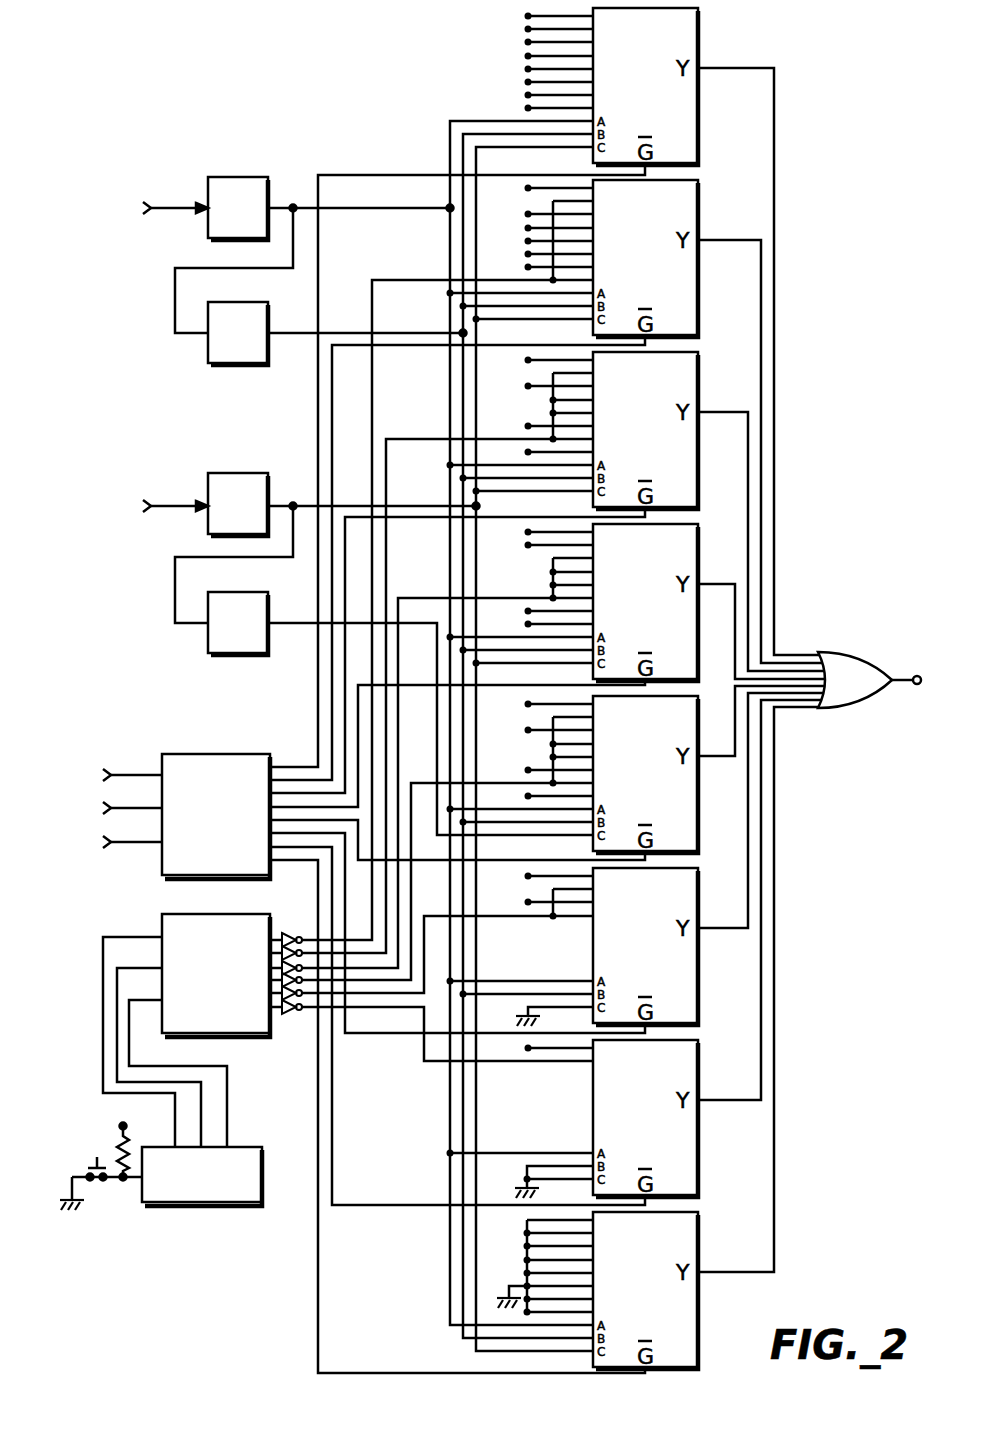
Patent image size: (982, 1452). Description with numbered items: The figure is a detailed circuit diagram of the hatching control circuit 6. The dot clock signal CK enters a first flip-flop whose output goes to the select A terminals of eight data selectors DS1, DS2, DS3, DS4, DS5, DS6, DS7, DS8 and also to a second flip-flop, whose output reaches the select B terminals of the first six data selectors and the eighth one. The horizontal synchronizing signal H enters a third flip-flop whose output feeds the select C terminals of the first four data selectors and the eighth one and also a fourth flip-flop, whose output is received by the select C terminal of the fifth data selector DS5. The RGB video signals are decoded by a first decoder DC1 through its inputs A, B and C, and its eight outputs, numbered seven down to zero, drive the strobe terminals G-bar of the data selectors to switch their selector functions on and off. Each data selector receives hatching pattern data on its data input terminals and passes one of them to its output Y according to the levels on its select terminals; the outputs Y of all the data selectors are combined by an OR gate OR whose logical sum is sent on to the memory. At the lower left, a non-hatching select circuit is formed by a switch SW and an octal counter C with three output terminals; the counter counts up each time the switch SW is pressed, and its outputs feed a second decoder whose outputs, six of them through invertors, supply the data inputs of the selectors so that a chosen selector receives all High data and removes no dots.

The hatching control circuit 6 is at (407, 107).
The first data selector DS1 is at (645, 86).
The second data selector DS2 is at (645, 258).
The third data selector DS3 is at (645, 430).
The fourth data selector DS4 is at (645, 602).
The fifth data selector DS5 is at (645, 774).
The sixth data selector DS6 is at (645, 946).
The seventh data selector DS7 is at (645, 1118).
The eighth data selector DS8 is at (645, 1290).
The first decoder DC1 is at (216, 895).
The octal counter C is at (202, 1176).
The switch SW is at (85, 1166).
The OR gate OR is at (869, 680).